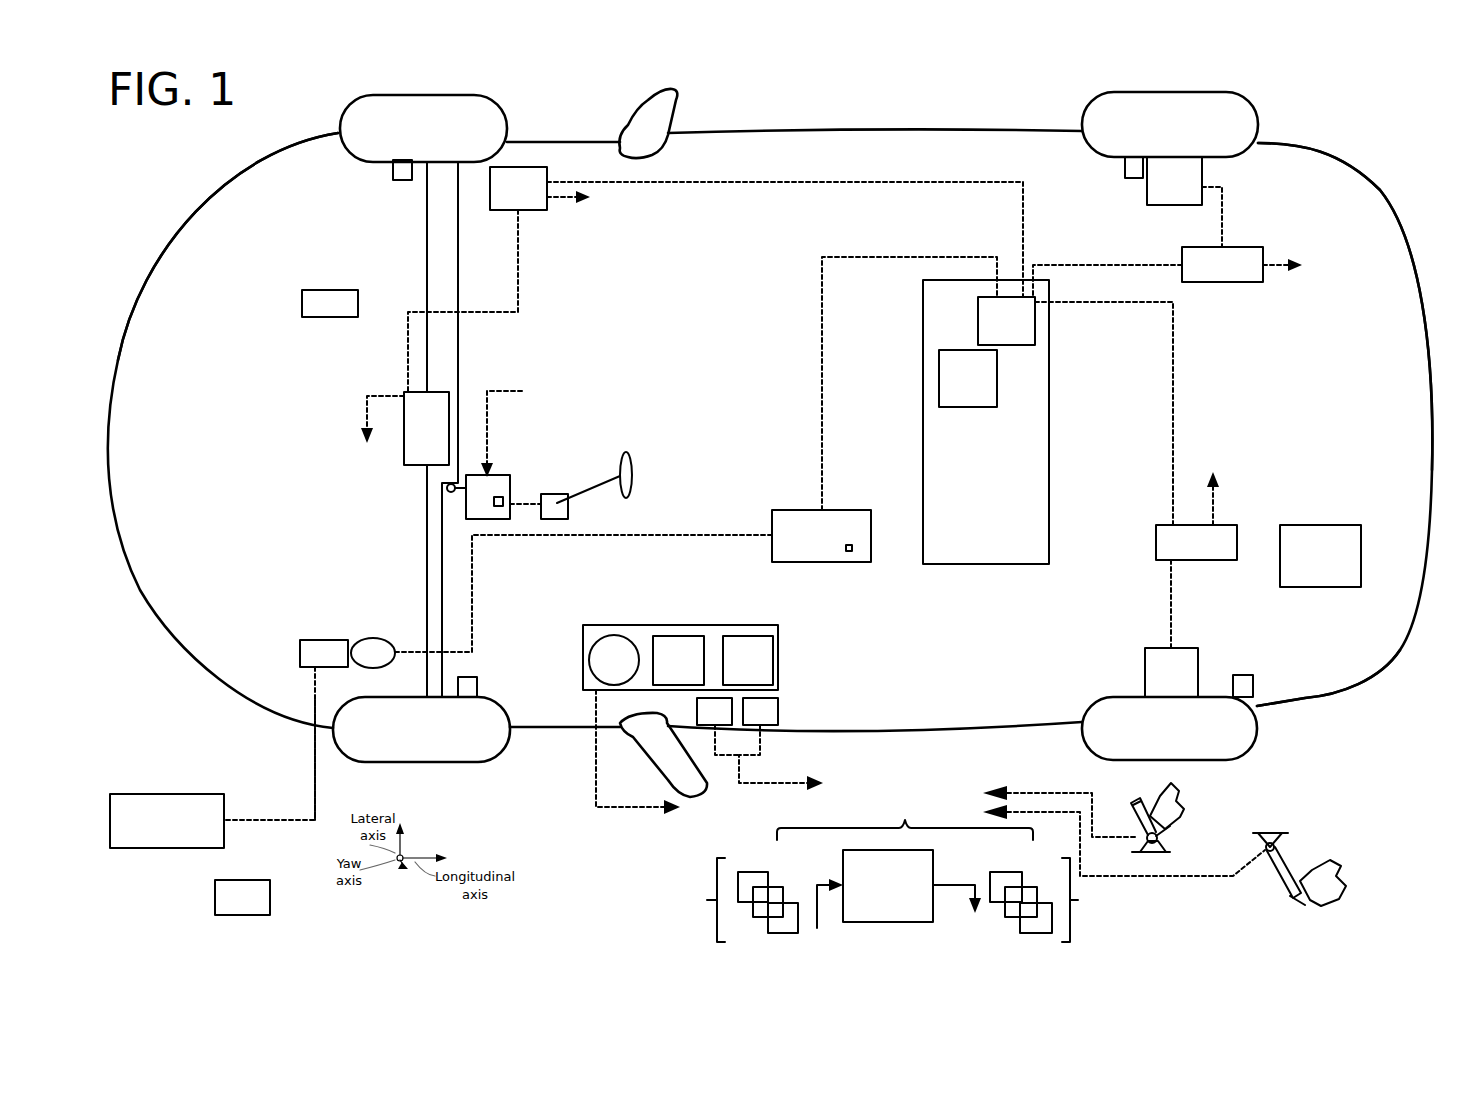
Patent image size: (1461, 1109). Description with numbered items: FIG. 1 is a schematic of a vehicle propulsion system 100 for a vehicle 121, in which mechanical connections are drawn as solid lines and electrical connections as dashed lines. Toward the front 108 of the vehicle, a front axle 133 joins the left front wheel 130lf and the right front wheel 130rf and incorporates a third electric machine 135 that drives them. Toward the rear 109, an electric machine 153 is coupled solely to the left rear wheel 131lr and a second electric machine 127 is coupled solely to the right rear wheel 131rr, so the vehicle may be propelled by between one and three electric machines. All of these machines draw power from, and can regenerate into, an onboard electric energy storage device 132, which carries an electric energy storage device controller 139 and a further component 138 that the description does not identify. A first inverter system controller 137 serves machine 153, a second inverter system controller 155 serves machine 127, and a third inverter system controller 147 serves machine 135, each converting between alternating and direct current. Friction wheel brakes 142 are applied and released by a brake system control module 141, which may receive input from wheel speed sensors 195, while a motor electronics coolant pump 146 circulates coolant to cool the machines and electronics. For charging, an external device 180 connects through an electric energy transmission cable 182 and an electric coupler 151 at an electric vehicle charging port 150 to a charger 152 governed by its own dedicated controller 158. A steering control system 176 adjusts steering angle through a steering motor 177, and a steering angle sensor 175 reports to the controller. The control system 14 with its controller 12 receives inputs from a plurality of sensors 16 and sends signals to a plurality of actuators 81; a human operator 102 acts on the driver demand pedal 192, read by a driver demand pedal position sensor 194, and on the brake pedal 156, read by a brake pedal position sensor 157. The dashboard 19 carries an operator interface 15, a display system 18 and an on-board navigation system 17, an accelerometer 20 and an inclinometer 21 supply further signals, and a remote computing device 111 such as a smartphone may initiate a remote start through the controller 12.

The vehicle propulsion system 100 is at (910, 108).
The front 108 is at (138, 212).
The rear 109 is at (1364, 156).
The vehicle 121 is at (1375, 712).
The remote computing device 111 is at (242, 897).
The controller 12 is at (899, 889).
The control system 14 is at (1021, 826).
The operator interface 15 is at (634, 724).
The sensors 16 is at (717, 900).
The on-board navigation system 17 is at (748, 660).
The display system 18 is at (678, 660).
The dashboard 19 is at (712, 625).
The accelerometer 20 is at (781, 744).
The inclinometer 21 is at (718, 726).
The actuators 81 is at (1074, 900).
The human operator 102 is at (1164, 808).
The second electric machine 127 is at (1184, 202).
The right front wheel 130rf is at (440, 95).
The left front wheel 130lf is at (420, 762).
The right rear wheel 131rr is at (1208, 92).
The left rear wheel 131lr is at (1210, 760).
The electric energy storage device 132 is at (986, 422).
The front axle 133 is at (412, 500).
The third electric machine 135 is at (403, 443).
The first inverter system controller 137 is at (1196, 538).
The engine 138 is at (1075, 411).
The electric energy storage device controller 139 is at (968, 378).
The brake system control module 141 is at (1320, 556).
The friction wheel brakes 142 is at (397, 181).
The motor electronics coolant pump 146 is at (330, 303).
The third inverter system controller 147 is at (715, 279).
The electric vehicle charging port 150 is at (378, 638).
The electric coupler 151 is at (286, 730).
The charger 152 is at (696, 454).
The electric machine 153 is at (1171, 672).
The second inverter system controller 155 is at (1180, 272).
The brake pedal 156 is at (1295, 898).
The brake pedal position sensor 157 is at (1262, 845).
The dedicated controller 158 is at (851, 553).
The steering angle sensor 175 is at (557, 493).
The steering control system 176 is at (495, 474).
The steering motor 177 is at (500, 496).
The external device 180 is at (167, 821).
The electric energy transmission cable 182 is at (315, 813).
The driver demand pedal 192 is at (1136, 822).
The driver demand pedal position sensor 194 is at (1162, 840).
The wheel speed sensors 195 is at (1199, 666).